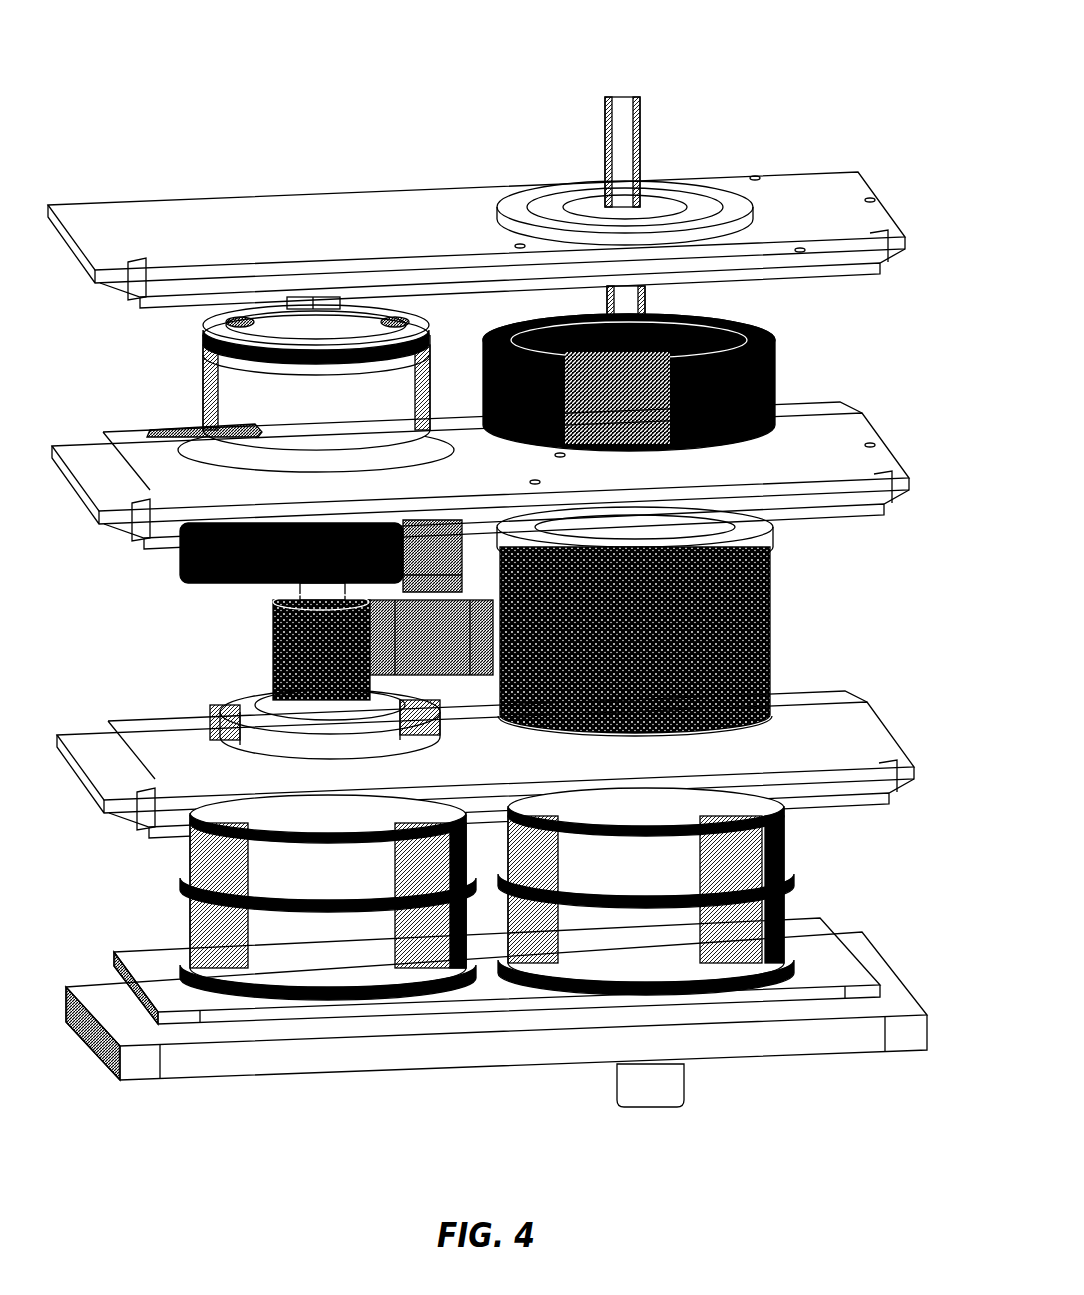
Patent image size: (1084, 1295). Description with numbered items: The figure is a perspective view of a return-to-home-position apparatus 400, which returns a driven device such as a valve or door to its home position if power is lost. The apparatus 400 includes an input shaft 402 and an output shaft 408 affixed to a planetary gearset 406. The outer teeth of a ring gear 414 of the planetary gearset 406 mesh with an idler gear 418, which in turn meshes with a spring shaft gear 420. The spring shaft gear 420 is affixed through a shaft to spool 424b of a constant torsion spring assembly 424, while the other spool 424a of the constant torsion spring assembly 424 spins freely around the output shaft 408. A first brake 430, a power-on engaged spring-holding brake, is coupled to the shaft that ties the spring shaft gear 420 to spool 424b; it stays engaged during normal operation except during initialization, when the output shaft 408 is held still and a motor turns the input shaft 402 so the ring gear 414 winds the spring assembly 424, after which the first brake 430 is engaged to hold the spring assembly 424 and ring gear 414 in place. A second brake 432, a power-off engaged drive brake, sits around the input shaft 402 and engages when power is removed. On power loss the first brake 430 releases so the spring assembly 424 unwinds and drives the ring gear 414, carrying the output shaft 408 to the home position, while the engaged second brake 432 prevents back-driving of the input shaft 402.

The return-to-home-position apparatus 400 is at (258, 163).
The input shaft 402 is at (608, 97).
The planetary gearset 406 is at (838, 567).
The output shaft 408 is at (652, 1108).
The ring gear 414 is at (776, 655).
The idler gear 418 is at (430, 637).
The spring shaft gear 420 is at (272, 636).
The constant torsion spring assembly 424 is at (457, 1005).
The spool 424a is at (573, 984).
The spool 424b is at (280, 990).
The first brake 430 is at (202, 378).
The second brake 432 is at (776, 353).